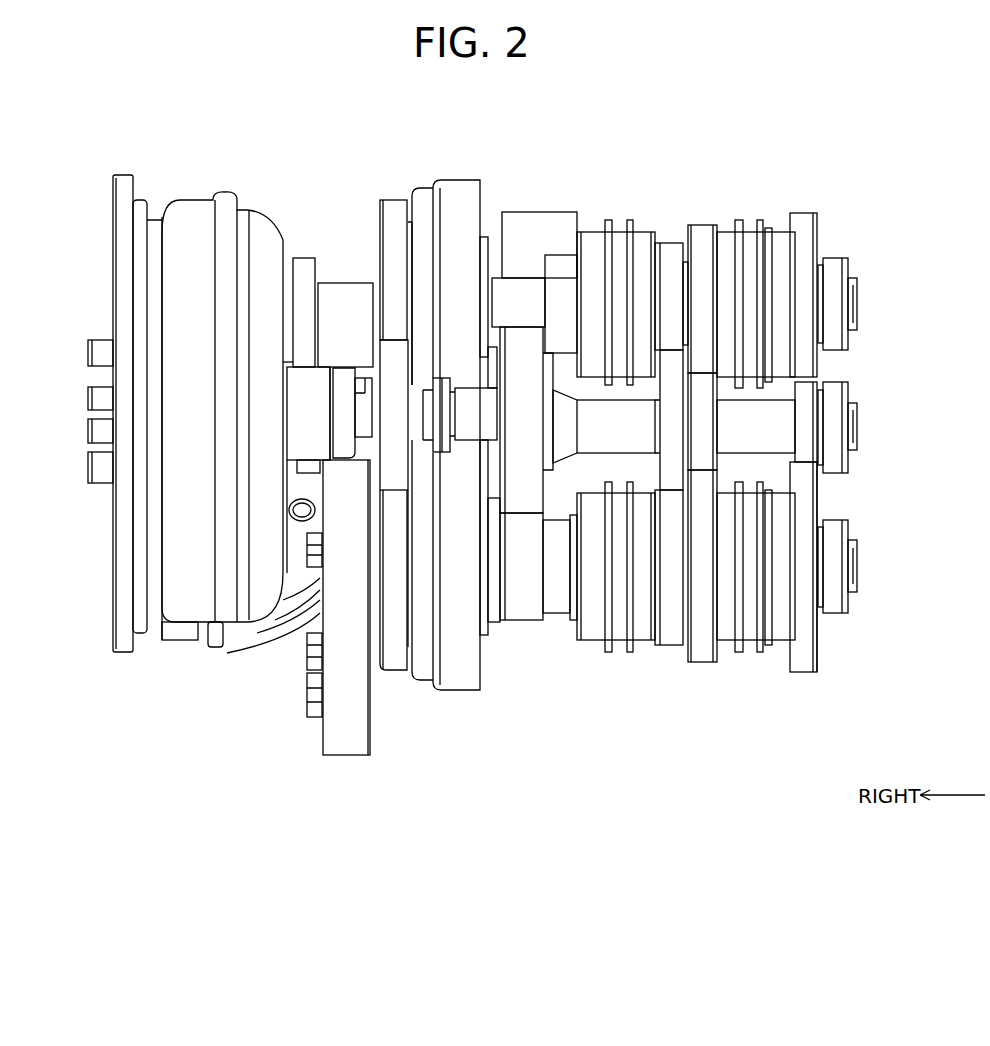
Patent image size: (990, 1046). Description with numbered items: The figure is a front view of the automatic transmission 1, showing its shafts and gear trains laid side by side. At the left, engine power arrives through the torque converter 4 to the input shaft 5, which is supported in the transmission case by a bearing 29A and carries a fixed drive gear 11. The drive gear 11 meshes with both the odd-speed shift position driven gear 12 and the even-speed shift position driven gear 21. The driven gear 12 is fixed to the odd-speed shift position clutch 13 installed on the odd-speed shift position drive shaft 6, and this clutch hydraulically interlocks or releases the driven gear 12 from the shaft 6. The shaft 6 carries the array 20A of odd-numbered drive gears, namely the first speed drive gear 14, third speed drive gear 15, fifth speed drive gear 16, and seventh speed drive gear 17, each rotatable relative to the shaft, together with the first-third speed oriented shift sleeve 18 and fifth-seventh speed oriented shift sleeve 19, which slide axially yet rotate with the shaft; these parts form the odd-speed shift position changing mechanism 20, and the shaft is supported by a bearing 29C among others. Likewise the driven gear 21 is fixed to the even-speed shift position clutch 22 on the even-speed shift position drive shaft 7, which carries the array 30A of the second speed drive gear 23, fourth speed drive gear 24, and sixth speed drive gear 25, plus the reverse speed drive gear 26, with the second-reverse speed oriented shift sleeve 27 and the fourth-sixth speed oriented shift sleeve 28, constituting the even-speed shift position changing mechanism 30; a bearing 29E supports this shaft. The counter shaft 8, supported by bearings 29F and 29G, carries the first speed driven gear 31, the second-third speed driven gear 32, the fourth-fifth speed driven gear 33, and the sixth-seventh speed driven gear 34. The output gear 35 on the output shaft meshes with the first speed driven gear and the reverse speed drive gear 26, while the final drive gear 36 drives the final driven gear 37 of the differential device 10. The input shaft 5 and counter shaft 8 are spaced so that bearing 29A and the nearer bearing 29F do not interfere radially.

The automatic transmission 1 is at (292, 161).
The torque converter 4 is at (190, 200).
The input shaft 5 is at (365, 400).
The odd-speed shift position drive shaft 6 is at (857, 565).
The even-speed shift position drive shaft 7 is at (857, 303).
The counter shaft 8 is at (857, 425).
The differential device 10 is at (281, 635).
The drive gear 11 is at (396, 355).
The odd-speed shift position driven gear 12 is at (393, 663).
The odd-speed shift position clutch 13 is at (452, 679).
The 1st speed drive gear 14 is at (523, 613).
The 3rd speed drive gear 15 is at (668, 640).
The 5th speed drive gear 16 is at (702, 653).
The 7th speed drive gear 17 is at (805, 662).
The 1st speed-3rd speed oriented shift sleeve 18 is at (620, 632).
The 5th speed-7th speed oriented shift sleeve 19 is at (748, 632).
The odd-speed shift position changing mechanism 20 is at (549, 697).
The array of odd-speed shift position drive gears 20A is at (828, 664).
The even-speed shift position driven gear 21 is at (395, 207).
The even-speed shift position clutch 22 is at (455, 192).
The 2nd speed drive gear 23 is at (667, 250).
The 4th speed drive gear 24 is at (702, 232).
The 6th speed drive gear 25 is at (803, 222).
The reverse speed drive gear 26 is at (560, 263).
The 2nd speed-reverse speed oriented shift sleeve 27 is at (618, 237).
The 4th speed-6th speed oriented shift sleeve 28 is at (748, 237).
The bearing 29A is at (445, 383).
The bearing 29C is at (832, 603).
The bearing 29E is at (832, 342).
The bearing 29F is at (510, 375).
The bearing 29G is at (832, 465).
The even-speed shift position changing mechanism 30 is at (669, 143).
The array of even-speed shift position drive gears 30A is at (860, 273).
The 1st speed driven gear 31 is at (525, 427).
The 2nd speed-3rd speed driven gear 32 is at (582, 537).
The 4th speed-5th speed driven gear 33 is at (703, 437).
The 6th speed-7th speed driven gear 34 is at (810, 390).
The output gear 35 is at (538, 218).
The final drive gear 36 is at (358, 290).
The final driven gear 37 is at (347, 747).